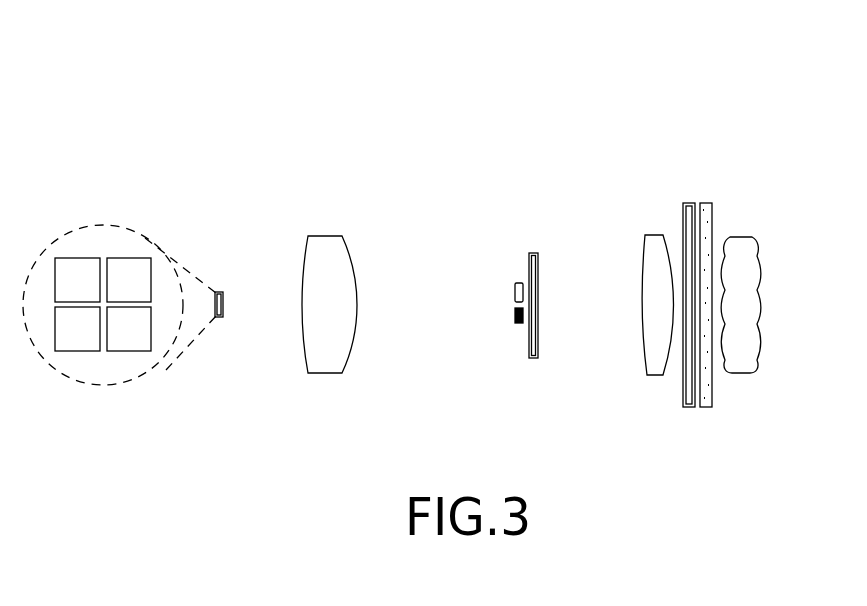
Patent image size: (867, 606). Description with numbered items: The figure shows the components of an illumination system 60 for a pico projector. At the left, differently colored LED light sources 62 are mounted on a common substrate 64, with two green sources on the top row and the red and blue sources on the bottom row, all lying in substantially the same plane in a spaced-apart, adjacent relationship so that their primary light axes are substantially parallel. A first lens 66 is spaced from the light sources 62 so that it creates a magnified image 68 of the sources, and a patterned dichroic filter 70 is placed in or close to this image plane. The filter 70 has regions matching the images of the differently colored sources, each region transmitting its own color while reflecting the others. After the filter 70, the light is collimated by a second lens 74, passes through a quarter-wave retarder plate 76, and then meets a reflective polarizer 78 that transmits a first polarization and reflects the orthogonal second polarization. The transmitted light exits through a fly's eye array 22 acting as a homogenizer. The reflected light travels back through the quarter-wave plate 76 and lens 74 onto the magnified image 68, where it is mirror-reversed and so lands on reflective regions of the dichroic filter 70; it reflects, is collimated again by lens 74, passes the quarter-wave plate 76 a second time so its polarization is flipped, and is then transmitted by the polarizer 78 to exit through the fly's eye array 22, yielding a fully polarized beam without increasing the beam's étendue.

The illumination system 60 is at (465, 97).
The differently colored LED light sources 62 is at (70, 258).
The common substrate 64 is at (212, 290).
The first lens 66 is at (325, 255).
The magnified image of the sources 68 is at (514, 281).
The patterned dichroic filter 70 is at (537, 363).
The second lens 74 is at (657, 253).
The quarter-wave retarder plate 76 is at (686, 400).
The reflective polarizer 78 is at (708, 396).
The fly's eye array 22 is at (740, 250).